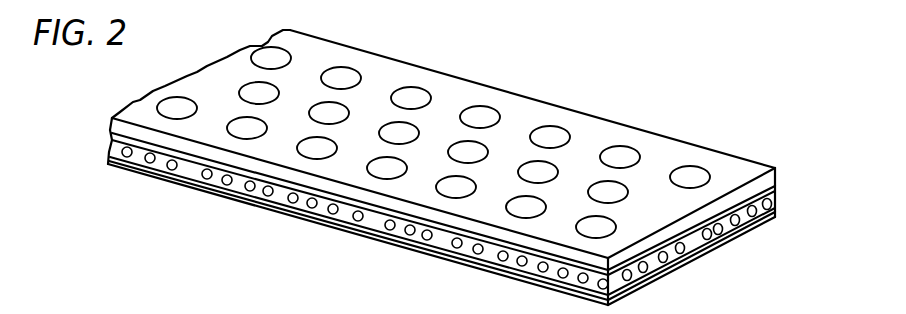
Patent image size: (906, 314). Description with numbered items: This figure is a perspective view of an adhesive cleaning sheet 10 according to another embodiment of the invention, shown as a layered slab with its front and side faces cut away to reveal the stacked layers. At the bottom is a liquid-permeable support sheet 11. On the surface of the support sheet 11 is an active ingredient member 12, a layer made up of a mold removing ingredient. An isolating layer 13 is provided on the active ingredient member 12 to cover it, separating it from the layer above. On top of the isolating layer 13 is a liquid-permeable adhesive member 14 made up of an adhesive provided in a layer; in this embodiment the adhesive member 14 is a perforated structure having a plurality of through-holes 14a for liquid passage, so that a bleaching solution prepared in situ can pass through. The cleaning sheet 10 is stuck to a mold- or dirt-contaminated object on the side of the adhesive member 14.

The adhesive cleaning sheet 10 is at (763, 55).
The liquid-permeable support sheet 11 is at (760, 221).
The active ingredient member 12 is at (777, 203).
The isolating layer 13 is at (777, 188).
The liquid-permeable adhesive member 14 is at (747, 166).
The through-holes 14a is at (490, 118).